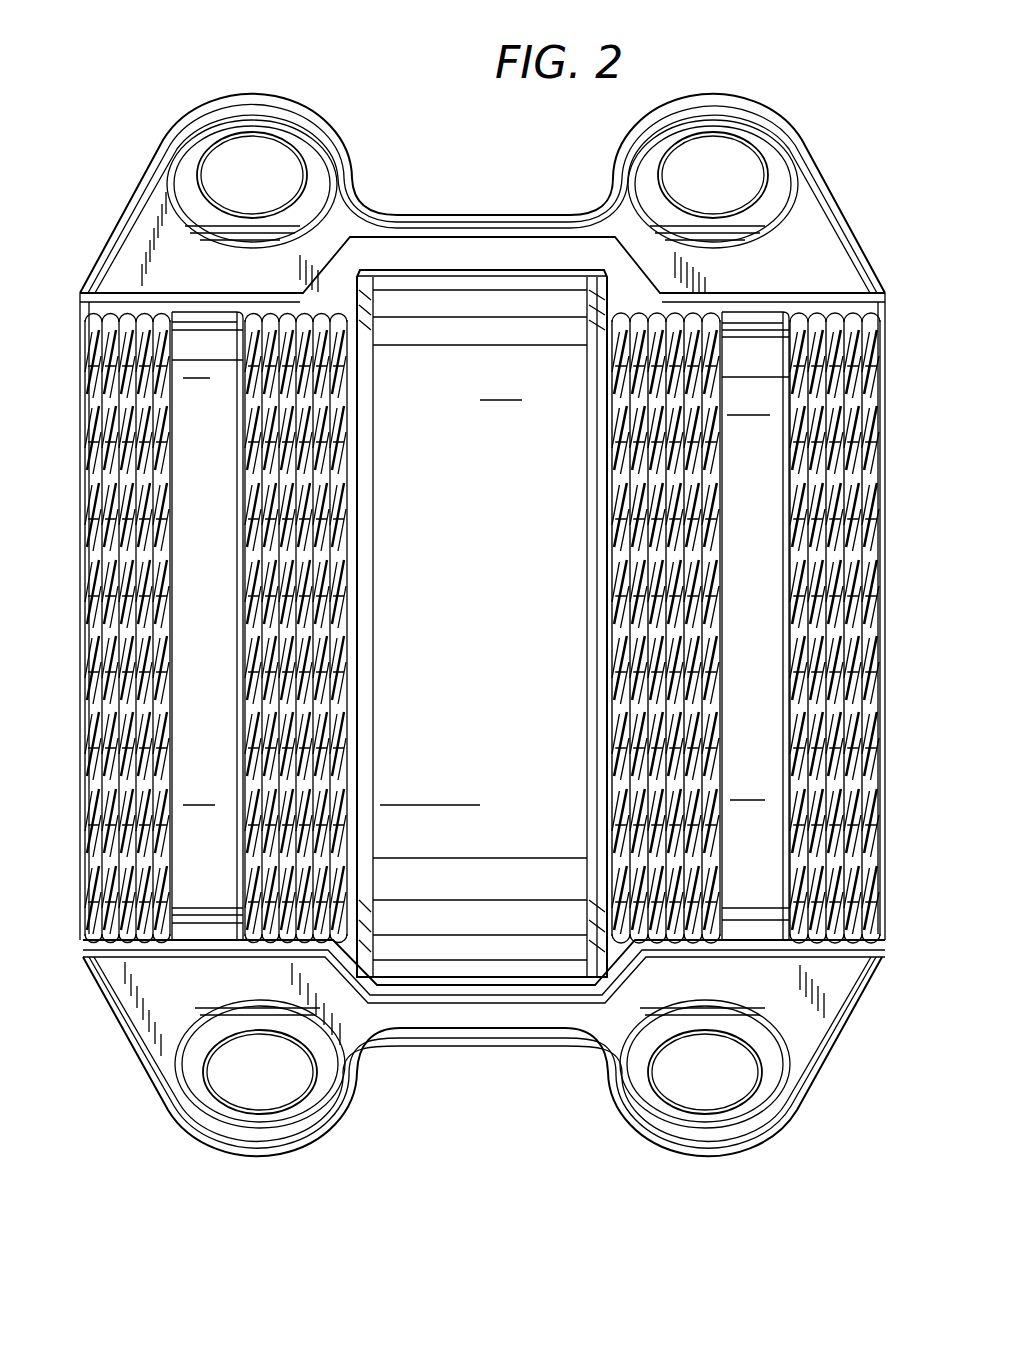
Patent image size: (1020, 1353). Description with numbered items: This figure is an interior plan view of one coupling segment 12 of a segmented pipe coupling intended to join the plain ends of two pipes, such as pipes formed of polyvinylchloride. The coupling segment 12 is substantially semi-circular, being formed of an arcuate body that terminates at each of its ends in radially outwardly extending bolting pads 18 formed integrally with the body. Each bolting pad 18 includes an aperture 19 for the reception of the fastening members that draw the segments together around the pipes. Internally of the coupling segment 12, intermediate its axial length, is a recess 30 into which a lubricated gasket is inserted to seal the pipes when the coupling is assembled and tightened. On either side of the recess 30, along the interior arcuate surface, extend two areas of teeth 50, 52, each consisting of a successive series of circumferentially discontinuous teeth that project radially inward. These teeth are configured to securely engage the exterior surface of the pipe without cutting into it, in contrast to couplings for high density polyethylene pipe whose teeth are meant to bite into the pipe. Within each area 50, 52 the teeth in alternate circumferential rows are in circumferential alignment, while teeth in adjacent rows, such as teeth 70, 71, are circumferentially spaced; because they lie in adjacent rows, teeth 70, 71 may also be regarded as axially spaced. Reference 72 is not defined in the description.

The coupling segment 12 is at (520, 262).
The bolting pad 18 is at (148, 207).
The aperture 19 is at (277, 165).
The recess 30 is at (445, 292).
The area of teeth 50 is at (113, 567).
The area of teeth 52 is at (630, 388).
The tooth 70 is at (865, 705).
The tooth 71 is at (852, 602).
The fin louver slot 72 is at (838, 652).